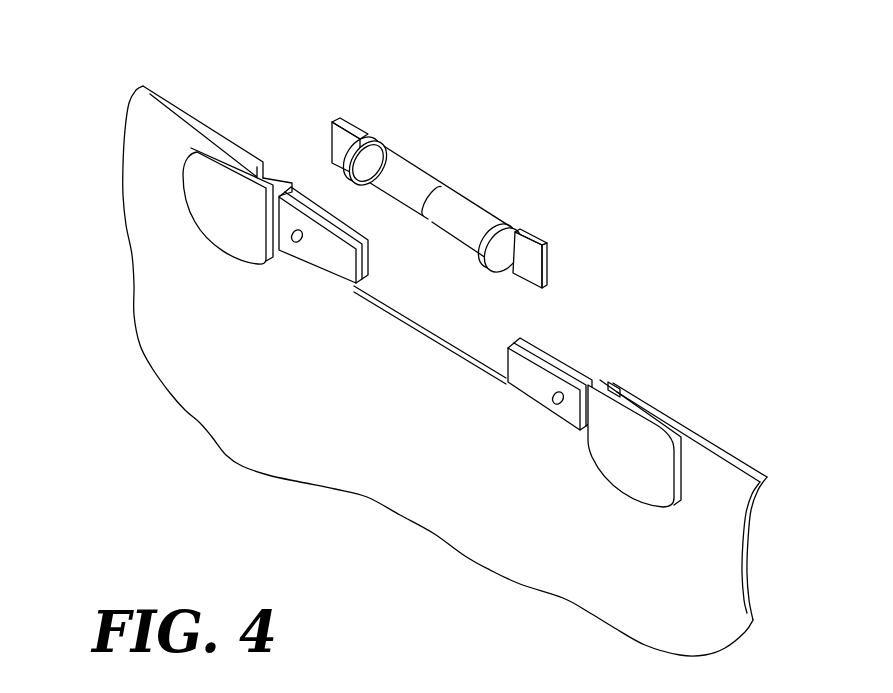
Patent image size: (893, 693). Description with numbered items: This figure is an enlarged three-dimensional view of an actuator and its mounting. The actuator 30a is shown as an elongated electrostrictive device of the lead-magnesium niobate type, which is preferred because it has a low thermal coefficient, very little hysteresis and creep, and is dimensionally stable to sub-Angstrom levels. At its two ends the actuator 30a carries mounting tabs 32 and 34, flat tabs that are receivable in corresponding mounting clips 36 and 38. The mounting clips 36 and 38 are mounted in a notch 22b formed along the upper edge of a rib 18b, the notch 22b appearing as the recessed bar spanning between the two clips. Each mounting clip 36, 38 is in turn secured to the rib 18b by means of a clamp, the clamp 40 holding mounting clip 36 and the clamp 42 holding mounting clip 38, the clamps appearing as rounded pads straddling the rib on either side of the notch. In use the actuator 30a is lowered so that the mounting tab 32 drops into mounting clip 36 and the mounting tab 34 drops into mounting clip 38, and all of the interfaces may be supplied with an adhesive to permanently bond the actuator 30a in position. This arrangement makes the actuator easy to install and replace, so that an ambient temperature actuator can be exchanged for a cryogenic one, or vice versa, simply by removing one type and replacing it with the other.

The rib 18b is at (210, 370).
The notch 22b is at (410, 325).
The actuator 30a is at (438, 180).
The mounting tab 32 is at (351, 123).
The mounting tab 34 is at (548, 262).
The mounting clip 36 is at (332, 253).
The mounting clip 38 is at (533, 388).
The clamp 40 is at (200, 182).
The clamp 42 is at (636, 463).